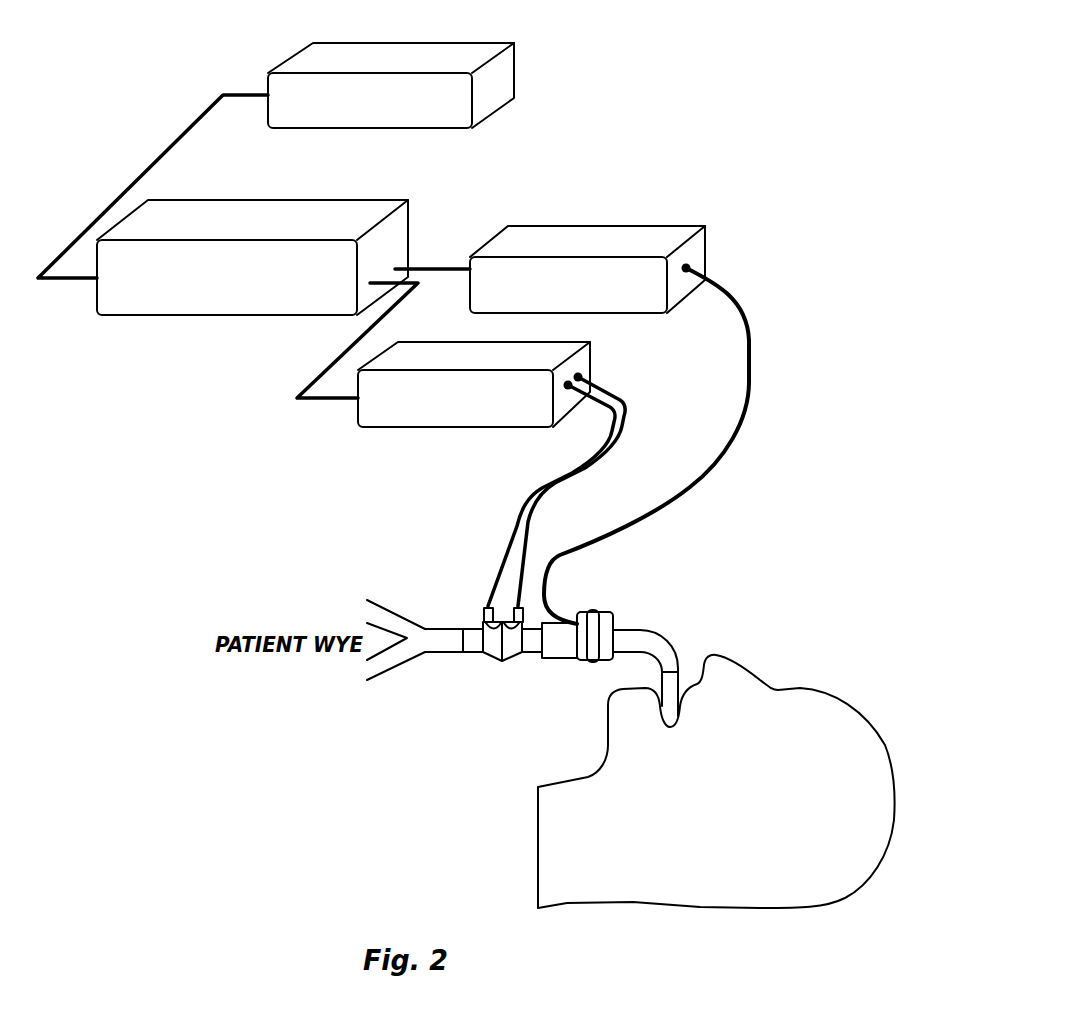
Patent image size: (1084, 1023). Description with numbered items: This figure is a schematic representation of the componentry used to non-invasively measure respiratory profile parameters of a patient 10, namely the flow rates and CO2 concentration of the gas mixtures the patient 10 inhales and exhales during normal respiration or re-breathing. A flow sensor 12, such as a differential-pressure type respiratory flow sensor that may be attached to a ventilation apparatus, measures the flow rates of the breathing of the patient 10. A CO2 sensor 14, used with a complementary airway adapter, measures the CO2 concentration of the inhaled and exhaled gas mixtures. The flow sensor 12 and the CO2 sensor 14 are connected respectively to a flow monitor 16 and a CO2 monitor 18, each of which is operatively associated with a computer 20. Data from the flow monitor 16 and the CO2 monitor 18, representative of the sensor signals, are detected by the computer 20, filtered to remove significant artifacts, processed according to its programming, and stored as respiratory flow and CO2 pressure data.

The patient 10 is at (555, 862).
The flow sensor 12 is at (493, 657).
The CO2 sensor 14 is at (605, 632).
The flow monitor 16 is at (395, 415).
The CO2 monitor 18 is at (602, 238).
The computer 20 is at (108, 94).